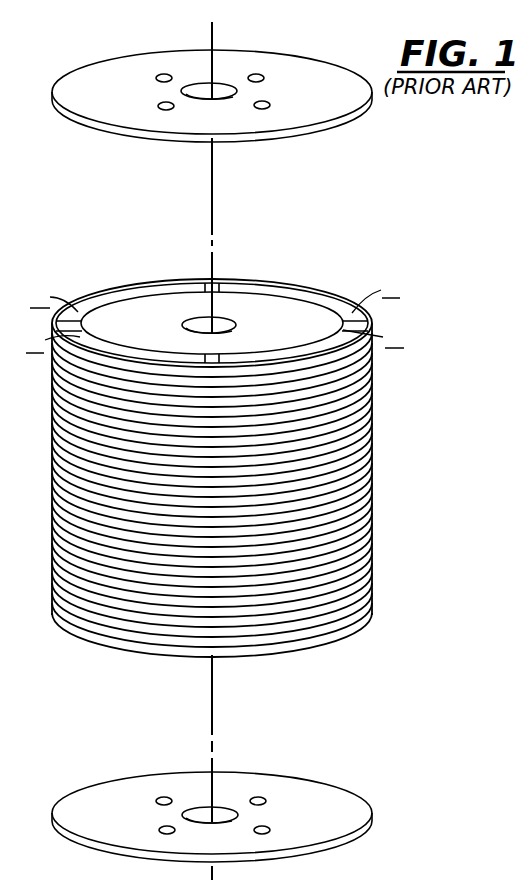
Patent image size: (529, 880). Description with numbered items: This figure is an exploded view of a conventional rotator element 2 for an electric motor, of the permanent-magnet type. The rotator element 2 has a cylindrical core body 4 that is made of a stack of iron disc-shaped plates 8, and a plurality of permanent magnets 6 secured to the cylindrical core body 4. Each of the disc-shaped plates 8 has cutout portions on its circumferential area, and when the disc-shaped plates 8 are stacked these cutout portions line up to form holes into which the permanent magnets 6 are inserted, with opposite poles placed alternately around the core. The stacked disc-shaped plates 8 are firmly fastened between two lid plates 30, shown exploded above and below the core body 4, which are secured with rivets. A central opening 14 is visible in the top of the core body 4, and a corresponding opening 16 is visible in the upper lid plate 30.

The rotator element 2 is at (235, 453).
The cylindrical core body 4 is at (235, 453).
The permanent magnets 6 is at (140, 293).
The disc-shaped plates 8 is at (82, 513).
The central shaft hole 14 is at (237, 323).
The shaft hole in end plate 16 is at (240, 92).
The lid plates 30 is at (311, 106).